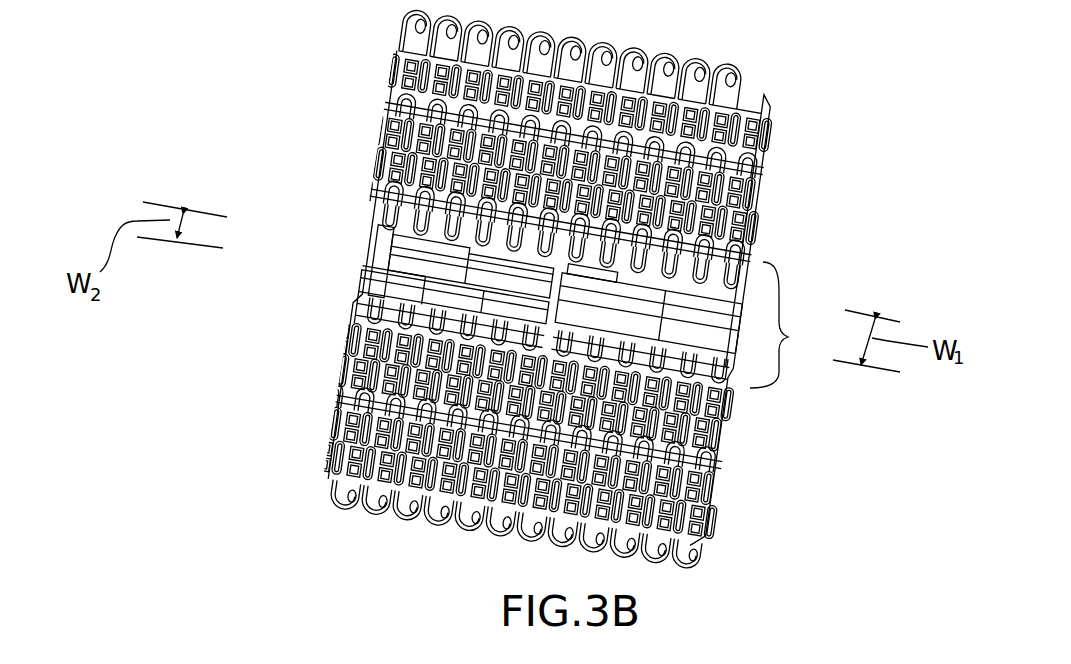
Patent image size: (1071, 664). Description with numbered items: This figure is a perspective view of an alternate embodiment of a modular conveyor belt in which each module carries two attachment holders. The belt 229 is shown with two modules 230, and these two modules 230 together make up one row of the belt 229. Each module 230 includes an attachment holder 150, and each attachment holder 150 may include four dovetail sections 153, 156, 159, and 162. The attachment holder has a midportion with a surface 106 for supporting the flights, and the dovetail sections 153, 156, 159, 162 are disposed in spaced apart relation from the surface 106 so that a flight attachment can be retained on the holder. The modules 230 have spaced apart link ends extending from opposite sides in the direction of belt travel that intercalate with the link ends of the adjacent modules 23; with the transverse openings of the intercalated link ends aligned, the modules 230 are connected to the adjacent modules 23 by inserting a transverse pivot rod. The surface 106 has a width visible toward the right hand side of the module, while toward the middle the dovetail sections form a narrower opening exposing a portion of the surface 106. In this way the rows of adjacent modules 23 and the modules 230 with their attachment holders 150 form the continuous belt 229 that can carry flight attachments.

The adjacent modules 23 is at (403, 31).
The surface 106 is at (646, 319).
The attachment holder 150 is at (509, 201).
The dovetail section 153 is at (380, 245).
The dovetail section 156 is at (375, 272).
The dovetail section 159 is at (440, 232).
The dovetail section 162 is at (367, 297).
The belt 229 is at (577, 287).
The module 230 is at (375, 252).